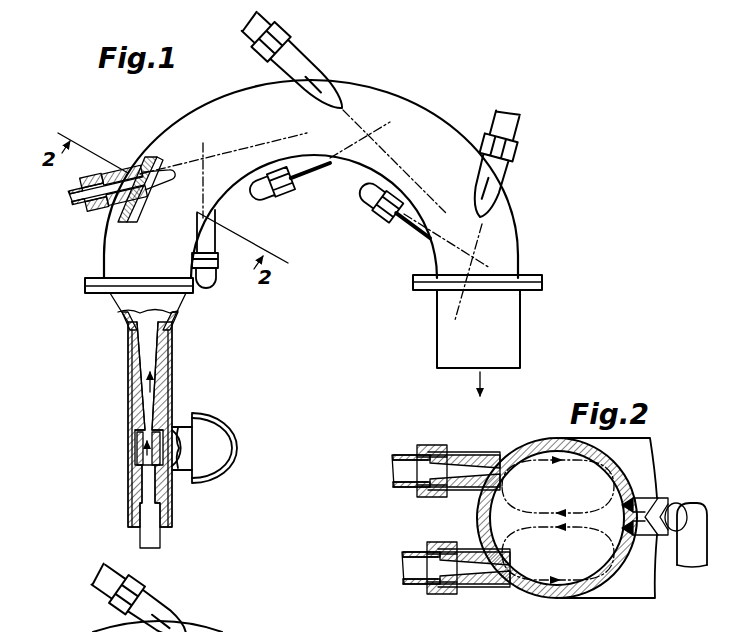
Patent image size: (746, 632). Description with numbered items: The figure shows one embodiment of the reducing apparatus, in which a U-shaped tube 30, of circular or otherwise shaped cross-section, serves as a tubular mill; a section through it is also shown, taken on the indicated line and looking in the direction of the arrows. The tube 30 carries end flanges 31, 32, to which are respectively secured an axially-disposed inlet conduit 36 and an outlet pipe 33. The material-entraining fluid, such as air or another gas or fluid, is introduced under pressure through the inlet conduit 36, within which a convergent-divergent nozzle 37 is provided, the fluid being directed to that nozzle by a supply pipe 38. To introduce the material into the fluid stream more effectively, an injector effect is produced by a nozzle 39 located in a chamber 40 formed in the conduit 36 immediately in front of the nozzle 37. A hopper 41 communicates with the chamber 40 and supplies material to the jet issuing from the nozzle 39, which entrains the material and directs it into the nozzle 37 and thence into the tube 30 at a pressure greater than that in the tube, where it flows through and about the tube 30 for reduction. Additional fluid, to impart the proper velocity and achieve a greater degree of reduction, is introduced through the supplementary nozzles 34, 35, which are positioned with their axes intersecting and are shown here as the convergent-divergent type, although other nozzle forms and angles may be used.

In FIG. 1, the U-shaped tube 30 is at (411, 128).
In FIG. 2, the U-shaped tube 30 is at (563, 596).
In FIG. 1, the end flange 31 is at (93, 278).
In FIG. 1, the end flange 32 is at (535, 276).
In FIG. 1, the outlet pipe 33 is at (516, 332).
In FIG. 1, the supplementary nozzle 34 is at (303, 63).
In FIG. 2, the supplementary nozzle 34 is at (476, 453).
In FIG. 1, the supplementary nozzle 35 is at (404, 220).
In FIG. 2, the supplementary nozzle 35 is at (645, 513).
In FIG. 1, the inlet conduit 36 is at (130, 360).
In FIG. 1, the convergent-divergent nozzle 37 is at (143, 397).
In FIG. 1, the supply pipe 38 is at (157, 535).
In FIG. 1, the nozzle 39 is at (132, 455).
In FIG. 1, the chamber 40 is at (138, 443).
In FIG. 1, the hopper 41 is at (224, 441).